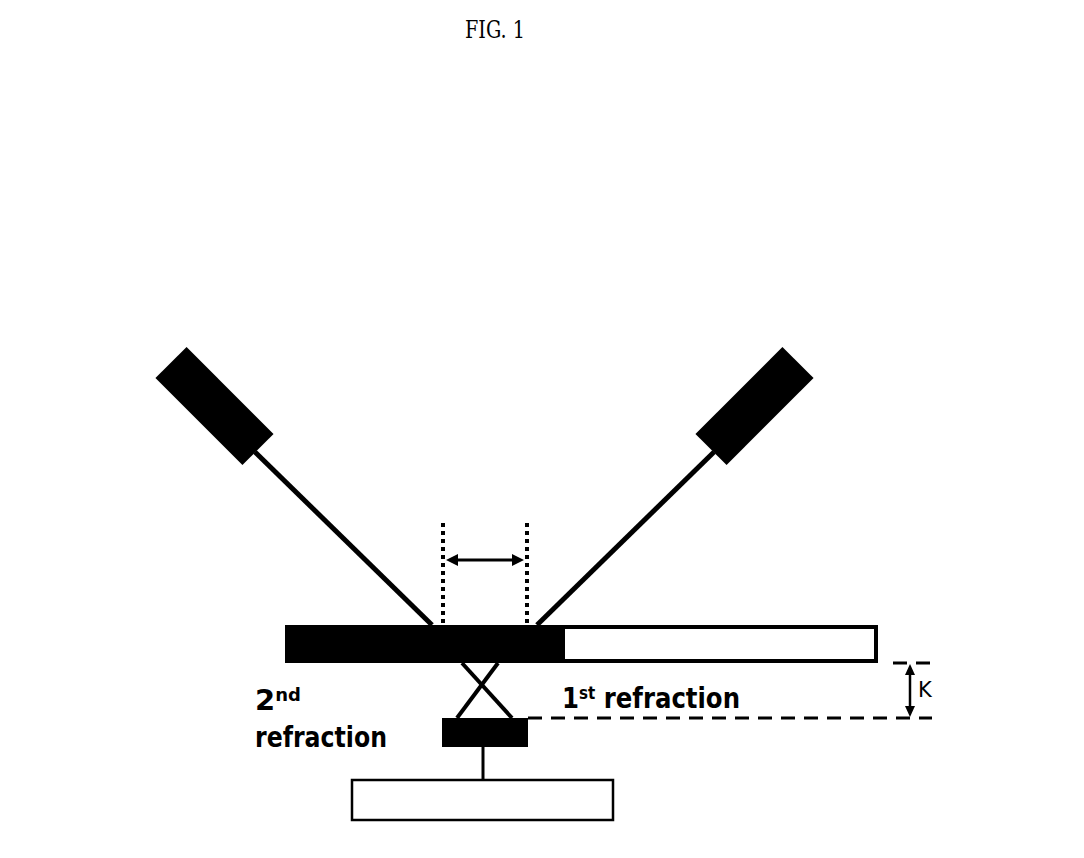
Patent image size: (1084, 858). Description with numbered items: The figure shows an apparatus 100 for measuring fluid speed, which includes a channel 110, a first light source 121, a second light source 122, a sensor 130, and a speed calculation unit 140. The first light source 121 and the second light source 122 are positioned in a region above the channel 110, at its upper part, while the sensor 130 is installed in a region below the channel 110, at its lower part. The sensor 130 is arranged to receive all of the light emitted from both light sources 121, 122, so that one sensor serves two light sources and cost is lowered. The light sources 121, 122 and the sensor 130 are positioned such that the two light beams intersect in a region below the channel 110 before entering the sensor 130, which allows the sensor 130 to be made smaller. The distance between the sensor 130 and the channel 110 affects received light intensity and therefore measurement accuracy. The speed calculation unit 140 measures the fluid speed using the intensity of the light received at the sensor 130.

The apparatus for measuring fluid speed 100 is at (826, 290).
The channel 110 is at (720, 642).
The first light source 121 is at (187, 412).
The second light source 122 is at (790, 402).
The sensor 130 is at (528, 730).
The speed calculation unit 140 is at (613, 790).